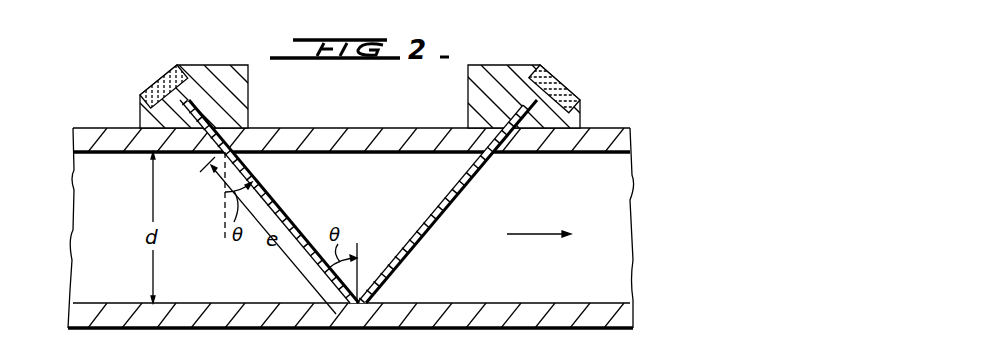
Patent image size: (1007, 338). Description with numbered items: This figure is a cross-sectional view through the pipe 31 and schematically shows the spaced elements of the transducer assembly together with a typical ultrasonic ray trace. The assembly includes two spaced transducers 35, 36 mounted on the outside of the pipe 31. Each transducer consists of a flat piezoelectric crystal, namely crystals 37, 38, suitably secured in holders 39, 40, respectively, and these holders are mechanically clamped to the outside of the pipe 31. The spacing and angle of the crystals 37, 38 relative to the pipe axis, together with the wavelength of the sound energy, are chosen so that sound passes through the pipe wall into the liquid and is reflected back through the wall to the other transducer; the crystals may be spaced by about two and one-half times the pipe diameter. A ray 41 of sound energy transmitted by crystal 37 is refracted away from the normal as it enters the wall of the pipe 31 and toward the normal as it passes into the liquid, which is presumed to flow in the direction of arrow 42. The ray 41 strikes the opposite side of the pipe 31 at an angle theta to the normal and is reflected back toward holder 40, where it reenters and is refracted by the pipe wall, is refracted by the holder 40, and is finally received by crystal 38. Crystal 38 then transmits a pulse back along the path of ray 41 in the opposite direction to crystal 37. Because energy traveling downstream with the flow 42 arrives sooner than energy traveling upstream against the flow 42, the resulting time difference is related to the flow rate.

The pipe 31 is at (622, 129).
The transducer 35 is at (185, 68).
The transducer 36 is at (513, 70).
The flat piezoelectric crystal 37 is at (160, 82).
The flat piezoelectric crystal 38 is at (557, 82).
The holder 39 is at (235, 110).
The holder 40 is at (468, 98).
The ray 41 is at (279, 198).
The arrow 42 is at (537, 234).